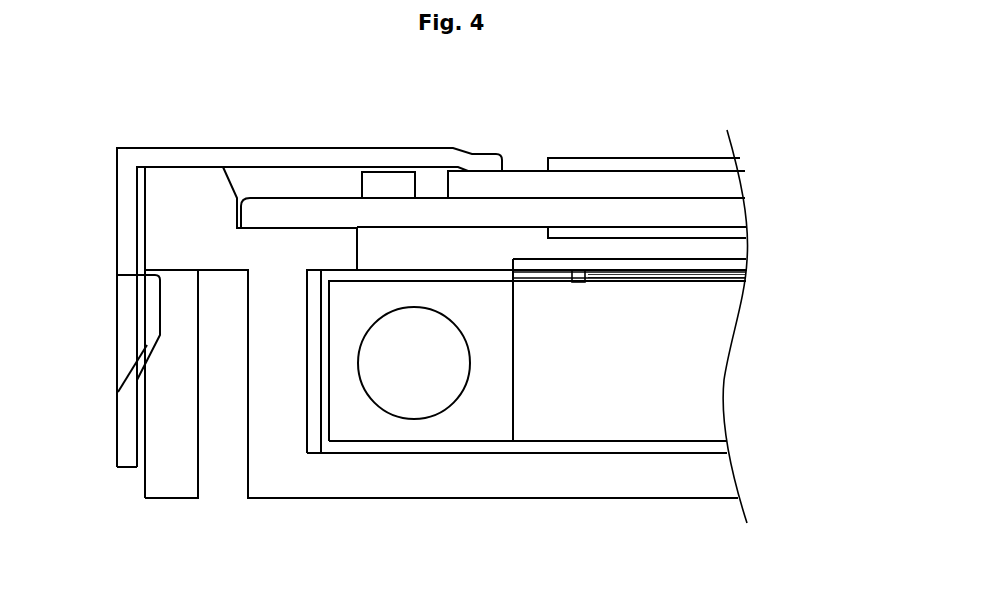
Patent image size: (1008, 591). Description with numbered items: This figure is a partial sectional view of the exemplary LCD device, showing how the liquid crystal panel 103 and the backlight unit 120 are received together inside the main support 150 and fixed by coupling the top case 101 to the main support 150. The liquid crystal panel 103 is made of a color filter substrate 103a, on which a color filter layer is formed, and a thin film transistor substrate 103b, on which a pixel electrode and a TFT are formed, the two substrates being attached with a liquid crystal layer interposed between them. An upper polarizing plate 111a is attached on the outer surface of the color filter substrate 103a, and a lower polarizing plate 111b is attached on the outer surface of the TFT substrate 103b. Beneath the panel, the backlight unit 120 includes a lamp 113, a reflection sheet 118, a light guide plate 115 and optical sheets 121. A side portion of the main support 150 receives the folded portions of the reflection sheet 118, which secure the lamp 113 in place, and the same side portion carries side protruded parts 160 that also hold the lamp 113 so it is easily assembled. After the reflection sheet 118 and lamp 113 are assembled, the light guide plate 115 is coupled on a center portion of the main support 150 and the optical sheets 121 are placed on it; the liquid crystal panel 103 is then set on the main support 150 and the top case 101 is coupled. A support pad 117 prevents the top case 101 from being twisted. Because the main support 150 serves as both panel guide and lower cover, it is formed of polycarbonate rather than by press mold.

The top case 101 is at (334, 155).
The liquid crystal panel 103 is at (569, 199).
The color filter substrate 103a is at (720, 190).
The thin film transistor (TFT) substrate 103b is at (720, 215).
The upper polarizing plate 111a is at (623, 157).
The lower polarizing plate 111b is at (684, 238).
The lamp 113 is at (398, 385).
The light guide plate 115 is at (712, 382).
The support pad 117 is at (398, 183).
The reflection sheet 118 is at (637, 447).
The backlight unit 120 is at (770, 335).
The optical sheets 121 is at (758, 274).
The main support 150 is at (170, 238).
The side protruded parts 160 is at (333, 248).